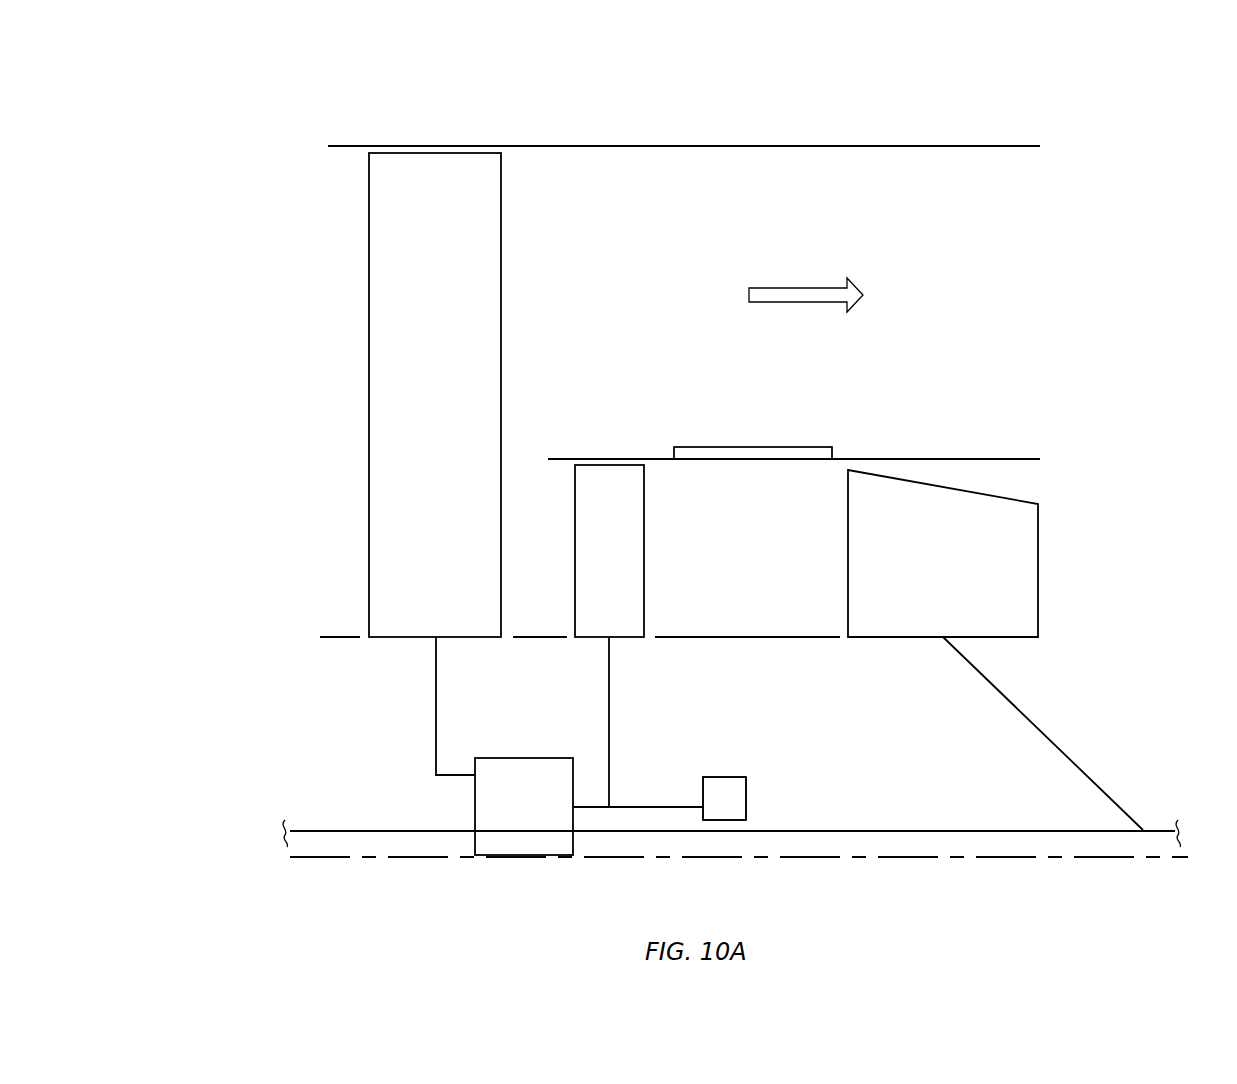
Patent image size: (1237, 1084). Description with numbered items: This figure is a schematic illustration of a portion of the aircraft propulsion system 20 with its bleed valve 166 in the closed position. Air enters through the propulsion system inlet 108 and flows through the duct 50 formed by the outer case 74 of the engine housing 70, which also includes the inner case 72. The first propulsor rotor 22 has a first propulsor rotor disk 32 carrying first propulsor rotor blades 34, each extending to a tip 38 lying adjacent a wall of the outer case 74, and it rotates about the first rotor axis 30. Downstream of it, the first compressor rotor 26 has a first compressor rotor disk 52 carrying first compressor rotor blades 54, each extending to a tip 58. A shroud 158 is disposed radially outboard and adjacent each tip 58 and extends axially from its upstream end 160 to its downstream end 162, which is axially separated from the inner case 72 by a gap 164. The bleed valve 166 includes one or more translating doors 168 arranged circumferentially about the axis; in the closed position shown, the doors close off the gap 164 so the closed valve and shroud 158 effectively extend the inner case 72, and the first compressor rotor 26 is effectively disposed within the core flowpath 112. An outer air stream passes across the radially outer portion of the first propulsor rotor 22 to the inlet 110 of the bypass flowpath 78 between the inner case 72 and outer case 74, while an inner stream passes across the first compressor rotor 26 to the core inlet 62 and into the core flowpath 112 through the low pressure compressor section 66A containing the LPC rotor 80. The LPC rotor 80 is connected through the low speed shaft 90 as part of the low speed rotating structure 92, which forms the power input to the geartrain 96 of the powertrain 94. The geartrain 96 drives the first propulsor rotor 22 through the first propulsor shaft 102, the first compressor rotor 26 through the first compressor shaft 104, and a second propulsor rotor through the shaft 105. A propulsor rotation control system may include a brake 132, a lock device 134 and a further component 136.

The aircraft propulsion system 20 is at (250, 128).
The first propulsor rotor 22 is at (508, 210).
The first compressor rotor 26 is at (660, 611).
The first rotor axis 30 is at (1170, 858).
The first propulsor rotor disk 32 is at (436, 705).
The first propulsor rotor blades 34 is at (464, 455).
The tip 38 is at (435, 148).
The duct 50 is at (773, 175).
The first compressor rotor disk 52 is at (609, 702).
The first compressor rotor blades 54 is at (623, 562).
The tip 58 is at (592, 465).
The inlet 62 is at (540, 603).
The low pressure compressor section 66A is at (958, 473).
The engine housing 70 is at (1058, 128).
The inner case 72 is at (1000, 459).
The outer case 74 is at (850, 146).
The bypass flowpath 78 is at (988, 331).
The LPC rotor 80 is at (976, 581).
The low speed shaft 90 is at (967, 833).
The low speed rotating structure 92 is at (1150, 815).
The powertrain 94 is at (517, 872).
The geartrain 96 is at (542, 817).
The first propulsor shaft 102 is at (452, 777).
The first compressor shaft 104 is at (655, 807).
The shaft 105 is at (355, 833).
The propulsion system inlet 108 is at (330, 238).
The inlet 110 is at (548, 307).
The core flowpath 112 is at (812, 601).
The brake 132 is at (746, 797).
The lock device 134 is at (724, 798).
The accessory component 136 is at (724, 798).
The shroud 158 is at (623, 459).
The upstream end 160 is at (548, 459).
The downstream end 162 is at (683, 459).
The gap 164 is at (764, 465).
The bleed valve 166 is at (745, 438).
The translating doors 168 is at (753, 453).